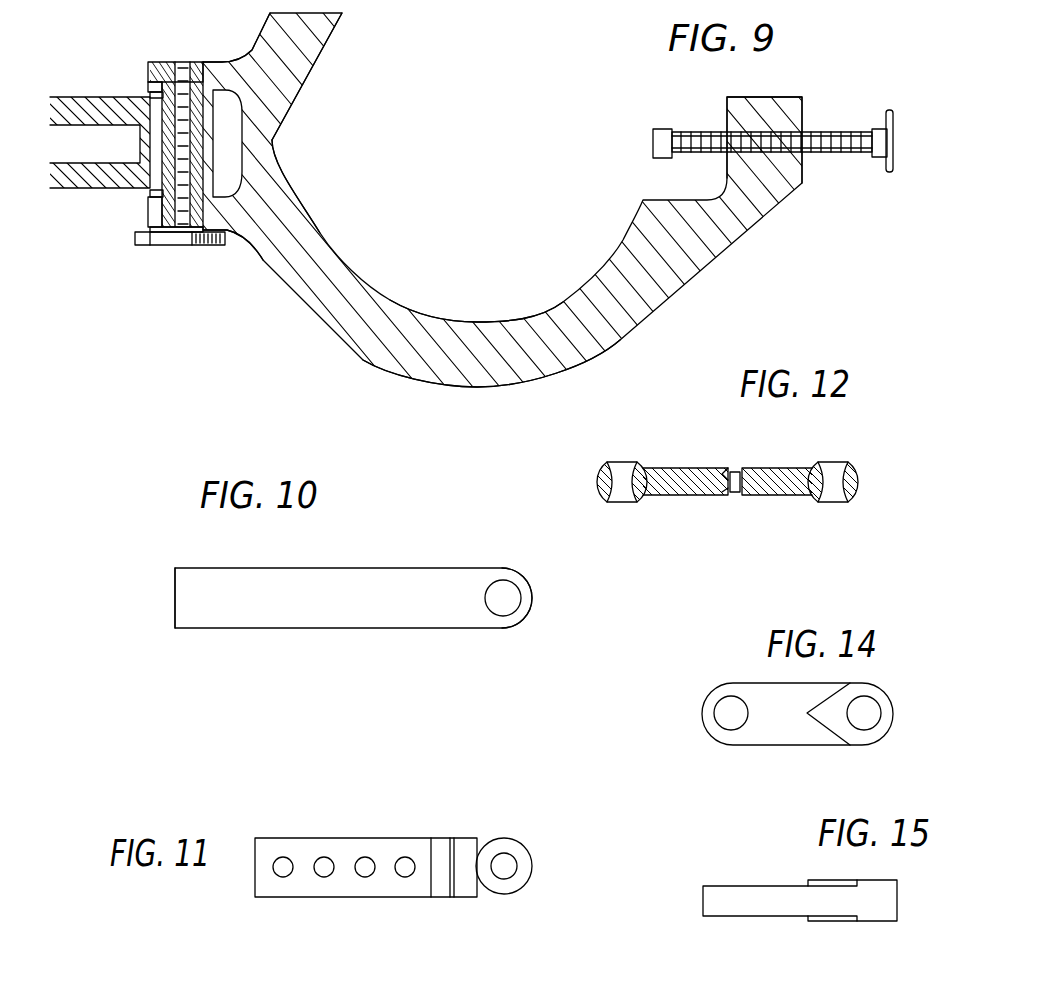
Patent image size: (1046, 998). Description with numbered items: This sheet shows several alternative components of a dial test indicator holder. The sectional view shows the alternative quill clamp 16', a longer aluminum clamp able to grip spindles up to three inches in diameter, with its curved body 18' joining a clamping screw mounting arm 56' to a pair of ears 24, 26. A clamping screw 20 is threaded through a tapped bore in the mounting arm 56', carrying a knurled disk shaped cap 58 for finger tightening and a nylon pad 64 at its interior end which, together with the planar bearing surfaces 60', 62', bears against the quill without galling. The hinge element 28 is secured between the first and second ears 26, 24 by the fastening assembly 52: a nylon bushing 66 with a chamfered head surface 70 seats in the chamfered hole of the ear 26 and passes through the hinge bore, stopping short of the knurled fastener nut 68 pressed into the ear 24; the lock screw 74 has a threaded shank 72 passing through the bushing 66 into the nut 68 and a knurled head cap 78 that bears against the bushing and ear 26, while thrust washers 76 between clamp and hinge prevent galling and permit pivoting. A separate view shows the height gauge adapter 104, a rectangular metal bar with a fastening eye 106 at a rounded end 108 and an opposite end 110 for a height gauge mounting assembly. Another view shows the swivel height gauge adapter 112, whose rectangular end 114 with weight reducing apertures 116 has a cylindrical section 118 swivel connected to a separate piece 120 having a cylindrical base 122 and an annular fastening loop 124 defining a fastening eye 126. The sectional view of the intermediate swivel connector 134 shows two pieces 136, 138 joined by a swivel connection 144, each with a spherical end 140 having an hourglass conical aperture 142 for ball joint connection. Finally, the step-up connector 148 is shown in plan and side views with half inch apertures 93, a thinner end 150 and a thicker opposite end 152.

In FIG. 9, the quill clamp 16' is at (502, 200).
In FIG. 9, the bottom portion of clamp body 18' is at (491, 362).
In FIG. 9, the clamping screw 20 is at (847, 153).
In FIG. 9, the ear 24 is at (222, 60).
In FIG. 9, the ear 26 is at (248, 245).
In FIG. 9, the hinge element 28 is at (91, 190).
In FIG. 9, the fastening assembly 52 is at (159, 160).
In FIG. 9, the clamping screw mounting arm 56' is at (774, 123).
In FIG. 9, the cap 58 is at (893, 162).
In FIG. 9, the planar bearing surface 60' is at (312, 76).
In FIG. 9, the planar bearing surface 62' is at (307, 186).
In FIG. 9, the nylon pad 64 is at (652, 127).
In FIG. 9, the nylon plastic bushing 66 is at (155, 223).
In FIG. 9, the fastener nut 68 is at (166, 62).
In FIG. 9, the chamfered surface 70 is at (152, 238).
In FIG. 9, the threaded shank 72 is at (182, 61).
In FIG. 9, the lock screw 74 is at (175, 244).
In FIG. 9, the thrust washers 76 is at (152, 94).
In FIG. 9, the head cap 78 is at (191, 243).
In FIG. 14, the apertures 93 is at (718, 700).
In FIG. 10, the height gauge adapter 104 is at (334, 583).
In FIG. 10, the fastening eye 106 is at (508, 585).
In FIG. 10, the rounded end 108 is at (532, 600).
In FIG. 10, the opposite end 110 is at (175, 590).
In FIG. 11, the height gauge adapter 112 is at (399, 864).
In FIG. 11, the end 114 is at (291, 900).
In FIG. 11, the apertures 116 is at (363, 857).
In FIG. 11, the cylindrical section 118 is at (440, 892).
In FIG. 11, the separate piece 120 is at (529, 843).
In FIG. 11, the base 122 is at (465, 892).
In FIG. 11, the fastening loop 124 is at (519, 848).
In FIG. 11, the fastening eye 126 is at (505, 877).
In FIG. 12, the intermediate swivel connector 134 is at (725, 477).
In FIG. 12, the separate piece 136 is at (680, 467).
In FIG. 12, the separate piece 138 is at (778, 465).
In FIG. 12, the spherical end 140 is at (598, 484).
In FIG. 12, the aperture 142 is at (625, 461).
In FIG. 12, the swivel connection 144 is at (737, 467).
In FIG. 14, the step-up connector 148 is at (796, 734).
In FIG. 15, the step-up connector 148 is at (796, 905).
In FIG. 14, the end 150 is at (740, 740).
In FIG. 15, the end 150 is at (740, 884).
In FIG. 15, the opposite end 152 is at (848, 879).